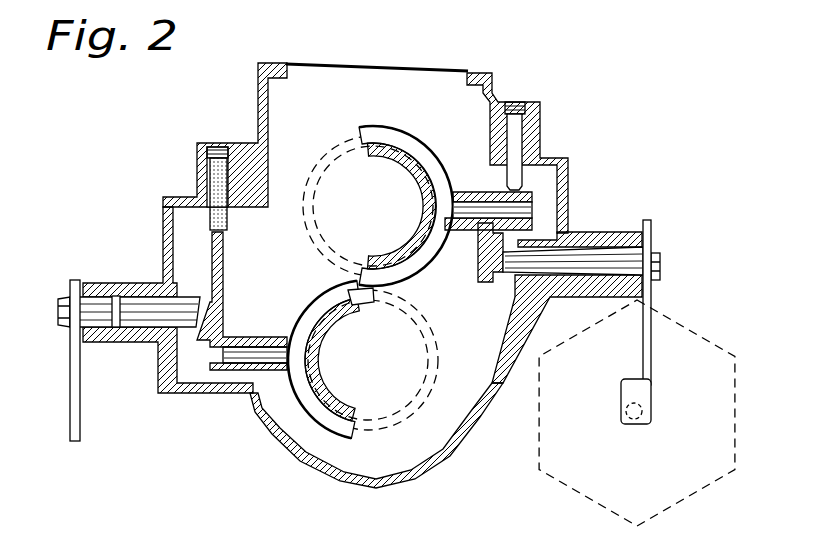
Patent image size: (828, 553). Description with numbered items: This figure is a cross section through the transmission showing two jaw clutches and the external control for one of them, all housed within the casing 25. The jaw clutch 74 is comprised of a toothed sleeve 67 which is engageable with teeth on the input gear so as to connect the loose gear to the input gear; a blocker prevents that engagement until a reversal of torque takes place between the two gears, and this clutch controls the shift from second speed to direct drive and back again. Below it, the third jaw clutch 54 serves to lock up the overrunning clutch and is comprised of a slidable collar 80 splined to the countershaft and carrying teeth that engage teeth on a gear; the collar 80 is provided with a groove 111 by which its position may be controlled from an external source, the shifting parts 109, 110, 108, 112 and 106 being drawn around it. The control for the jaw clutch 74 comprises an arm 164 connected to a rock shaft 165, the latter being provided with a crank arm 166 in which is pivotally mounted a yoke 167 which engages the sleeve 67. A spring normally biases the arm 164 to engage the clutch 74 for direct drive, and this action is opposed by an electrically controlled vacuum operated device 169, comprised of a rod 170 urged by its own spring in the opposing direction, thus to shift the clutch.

The housing 25 is at (447, 64).
The jaw clutch 74 is at (366, 128).
The yoke 167 is at (437, 152).
The toothed sleeve 67 is at (397, 155).
The crank arm 166 is at (477, 192).
The rock shaft 165 is at (604, 256).
The arm 164 is at (645, 322).
The rod 170 is at (643, 411).
The electrically controlled vacuum operated device 169 is at (686, 503).
The jaw clutch 54 is at (446, 346).
The slidable collar 80 is at (333, 317).
The lower brake lining 110 is at (306, 404).
The groove 111 is at (353, 290).
The shoe anchor pin 109 is at (260, 340).
The pivot shaft 108 is at (145, 305).
The bolt 112 is at (222, 258).
The lever plate 106 is at (76, 409).